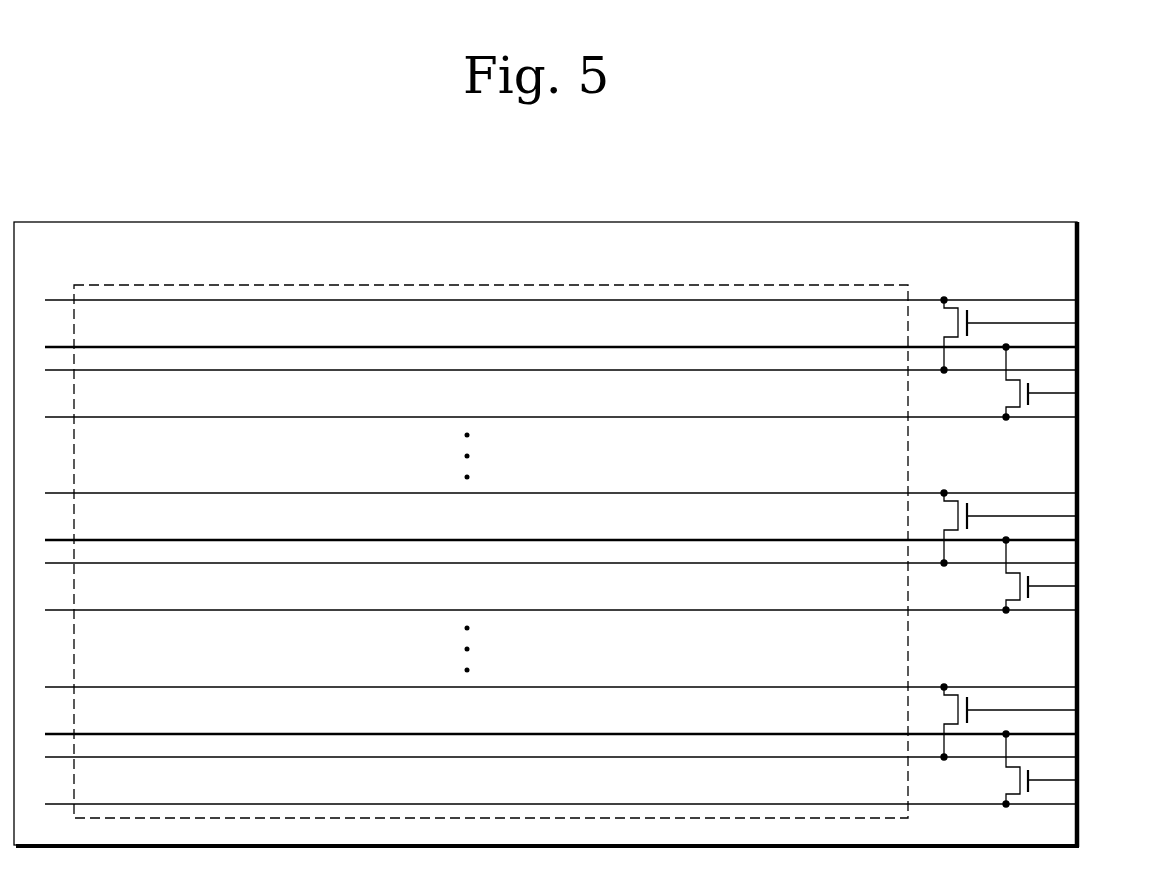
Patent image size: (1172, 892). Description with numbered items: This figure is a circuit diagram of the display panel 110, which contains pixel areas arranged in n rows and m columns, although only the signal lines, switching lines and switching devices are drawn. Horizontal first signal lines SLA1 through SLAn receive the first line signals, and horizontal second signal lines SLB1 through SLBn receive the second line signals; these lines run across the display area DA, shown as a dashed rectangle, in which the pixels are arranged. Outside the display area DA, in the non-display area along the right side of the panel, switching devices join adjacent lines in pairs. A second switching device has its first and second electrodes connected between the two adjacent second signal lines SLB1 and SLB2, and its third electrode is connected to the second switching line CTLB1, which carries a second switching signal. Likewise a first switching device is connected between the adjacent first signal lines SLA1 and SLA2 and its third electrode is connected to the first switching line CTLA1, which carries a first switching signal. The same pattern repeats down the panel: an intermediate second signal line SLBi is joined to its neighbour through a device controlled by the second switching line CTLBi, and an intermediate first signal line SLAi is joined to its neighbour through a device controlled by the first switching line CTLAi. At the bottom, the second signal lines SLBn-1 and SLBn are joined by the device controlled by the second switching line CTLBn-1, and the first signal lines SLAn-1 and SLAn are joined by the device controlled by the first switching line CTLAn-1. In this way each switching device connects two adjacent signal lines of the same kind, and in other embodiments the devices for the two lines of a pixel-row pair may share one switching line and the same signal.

The display panel 110 is at (1032, 222).
The display area DA is at (862, 283).
The second signal line SLB1 is at (1057, 295).
The second switching line CTLB1 is at (1057, 318).
The first signal line SLA1 is at (1057, 342).
The second signal line SLB2 is at (1057, 365).
The first switching line CTLA1 is at (1057, 388).
The first signal line SLA2 is at (1057, 412).
The second signal line SLBi is at (1057, 488).
The second switching line CTLBi is at (1057, 511).
The first signal line SLAi is at (1057, 535).
The first switching line CTLAi is at (1057, 581).
The second signal line SLBn-1 is at (1057, 682).
The second switching line CTLBn-1 is at (1057, 705).
The first signal line SLAn-1 is at (1057, 729).
The second signal line SLBn is at (1057, 752).
The first switching line CTLAn-1 is at (1057, 775).
The first signal line SLAn is at (1057, 799).